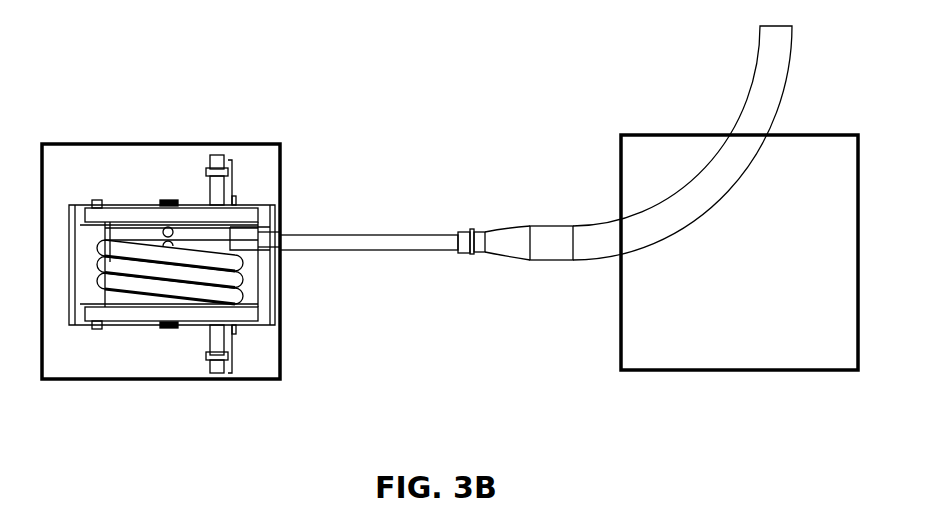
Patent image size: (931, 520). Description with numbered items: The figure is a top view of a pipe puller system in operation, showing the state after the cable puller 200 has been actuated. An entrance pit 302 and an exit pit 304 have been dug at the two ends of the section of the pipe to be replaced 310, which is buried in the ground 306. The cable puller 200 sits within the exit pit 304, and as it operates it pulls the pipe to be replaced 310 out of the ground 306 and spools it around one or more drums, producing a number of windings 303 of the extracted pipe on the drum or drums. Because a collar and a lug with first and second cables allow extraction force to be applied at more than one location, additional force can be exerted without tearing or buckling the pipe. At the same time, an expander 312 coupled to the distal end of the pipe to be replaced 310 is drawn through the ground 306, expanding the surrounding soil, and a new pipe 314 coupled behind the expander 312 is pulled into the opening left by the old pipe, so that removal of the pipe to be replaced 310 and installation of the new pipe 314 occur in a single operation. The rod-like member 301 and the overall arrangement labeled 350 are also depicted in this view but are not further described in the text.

The cable puller 200 is at (148, 218).
The rod 301 is at (383, 253).
The entrance pit 302 is at (795, 135).
The windings 303 is at (182, 295).
The exit pit 304 is at (217, 143).
The ground 306 is at (397, 206).
The pipe to be replaced 310 is at (477, 256).
The expander 312 is at (515, 237).
The new pipe 314 is at (762, 78).
The system 350 is at (524, 391).